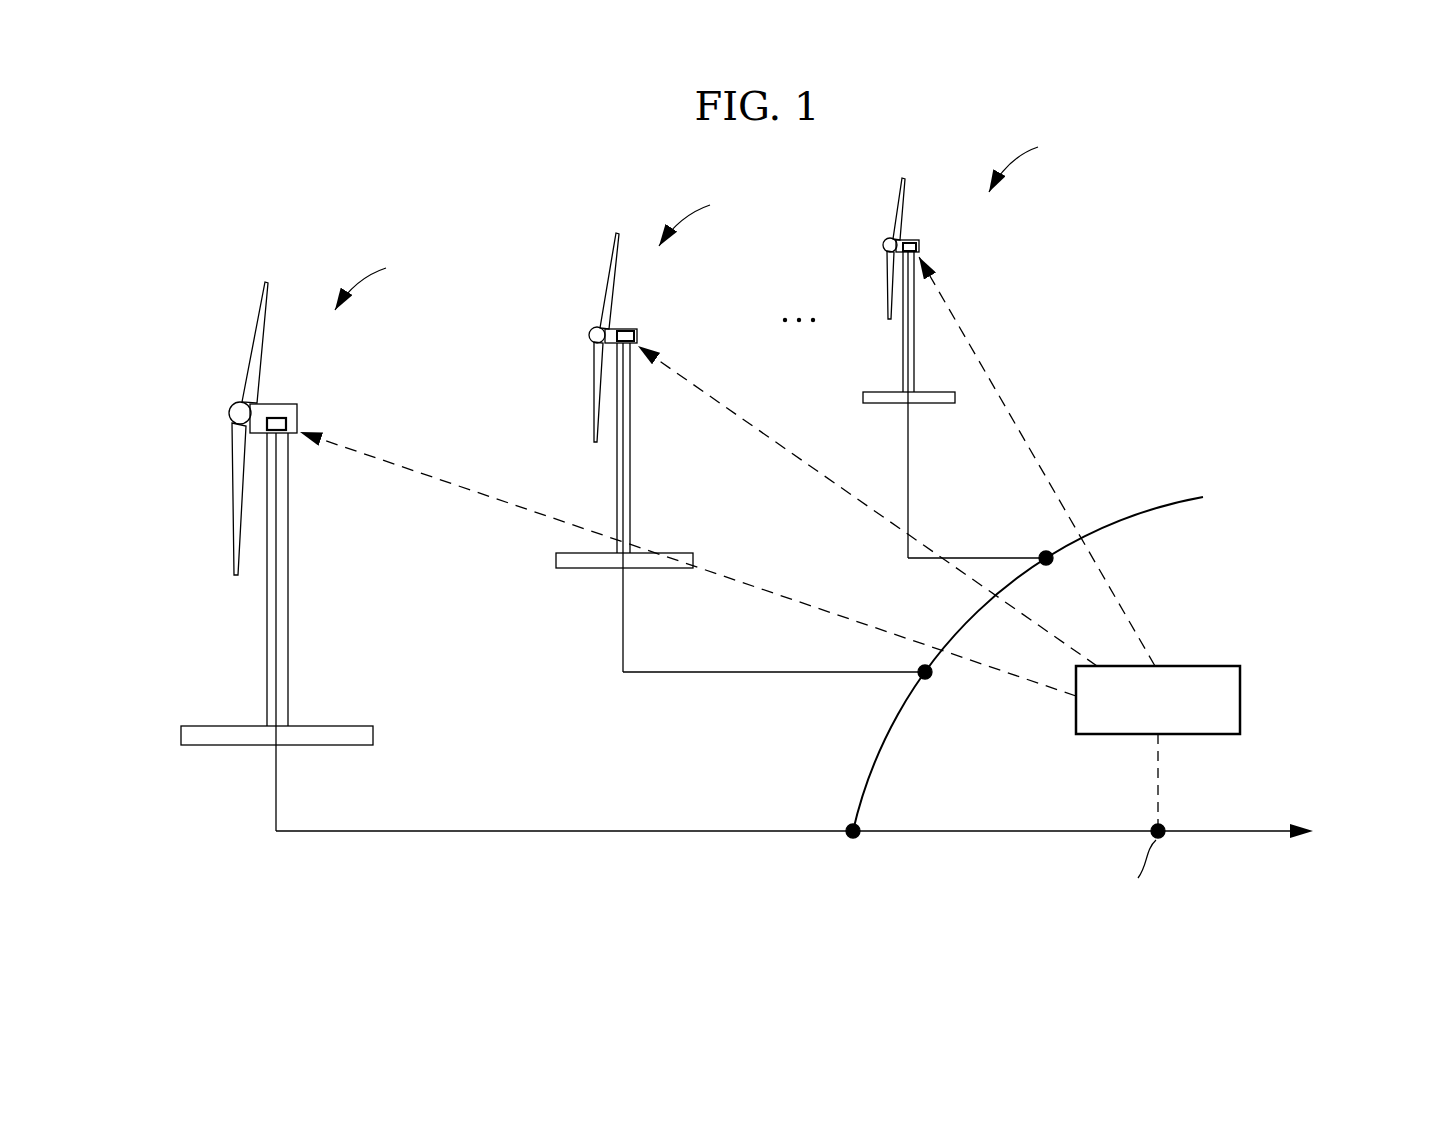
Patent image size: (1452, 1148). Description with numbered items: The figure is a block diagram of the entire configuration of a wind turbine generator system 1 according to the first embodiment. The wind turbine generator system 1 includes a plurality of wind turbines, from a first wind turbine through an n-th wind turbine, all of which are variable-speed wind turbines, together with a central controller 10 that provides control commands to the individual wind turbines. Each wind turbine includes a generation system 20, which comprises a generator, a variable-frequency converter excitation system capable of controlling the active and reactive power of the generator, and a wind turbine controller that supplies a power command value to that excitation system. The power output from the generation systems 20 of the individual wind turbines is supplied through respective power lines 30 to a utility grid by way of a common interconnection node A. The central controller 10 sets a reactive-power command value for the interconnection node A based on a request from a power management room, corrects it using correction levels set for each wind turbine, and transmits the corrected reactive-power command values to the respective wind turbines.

The wind turbine generator system 1 is at (1252, 238).
The central controller 10 is at (1241, 700).
The generation system 20 is at (624, 428).
The power line 30 is at (794, 580).